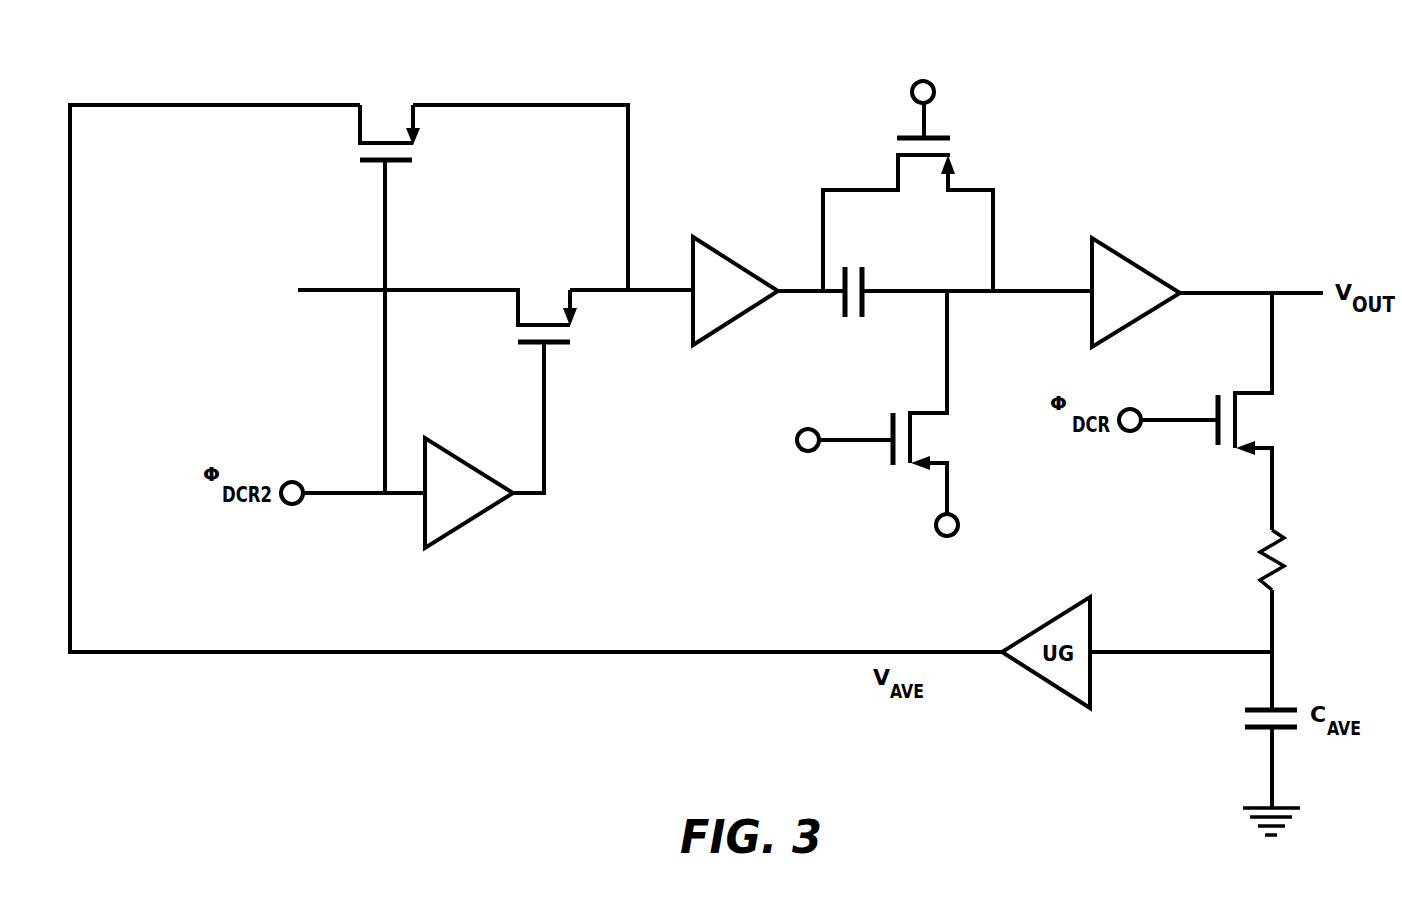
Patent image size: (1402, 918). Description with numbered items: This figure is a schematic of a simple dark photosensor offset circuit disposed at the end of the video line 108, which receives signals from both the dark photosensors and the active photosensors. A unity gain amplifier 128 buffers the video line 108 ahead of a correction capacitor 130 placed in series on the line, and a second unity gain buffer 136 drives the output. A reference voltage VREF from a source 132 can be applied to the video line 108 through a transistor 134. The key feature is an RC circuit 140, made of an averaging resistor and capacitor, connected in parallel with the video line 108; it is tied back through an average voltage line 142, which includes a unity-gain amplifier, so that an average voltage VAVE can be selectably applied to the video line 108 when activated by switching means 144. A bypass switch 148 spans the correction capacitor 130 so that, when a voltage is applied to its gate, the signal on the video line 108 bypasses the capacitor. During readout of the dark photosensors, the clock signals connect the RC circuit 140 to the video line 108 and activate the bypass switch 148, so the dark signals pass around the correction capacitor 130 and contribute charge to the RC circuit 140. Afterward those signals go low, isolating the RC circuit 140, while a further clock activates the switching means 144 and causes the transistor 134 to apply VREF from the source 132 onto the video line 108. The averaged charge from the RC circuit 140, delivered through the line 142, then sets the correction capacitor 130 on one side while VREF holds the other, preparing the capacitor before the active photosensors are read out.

The video line 108 is at (345, 290).
The unity gain amplifier 128 is at (738, 262).
The correction capacitor 130 is at (864, 300).
The source of reference voltage 132 is at (960, 528).
The transistor 134 is at (935, 440).
The unity gain output buffer amplifier 136 is at (1148, 268).
The RC circuit 140 is at (1250, 560).
The average voltage line 142 is at (575, 654).
The switching means 144 is at (468, 458).
The bypass switch 148 is at (895, 170).